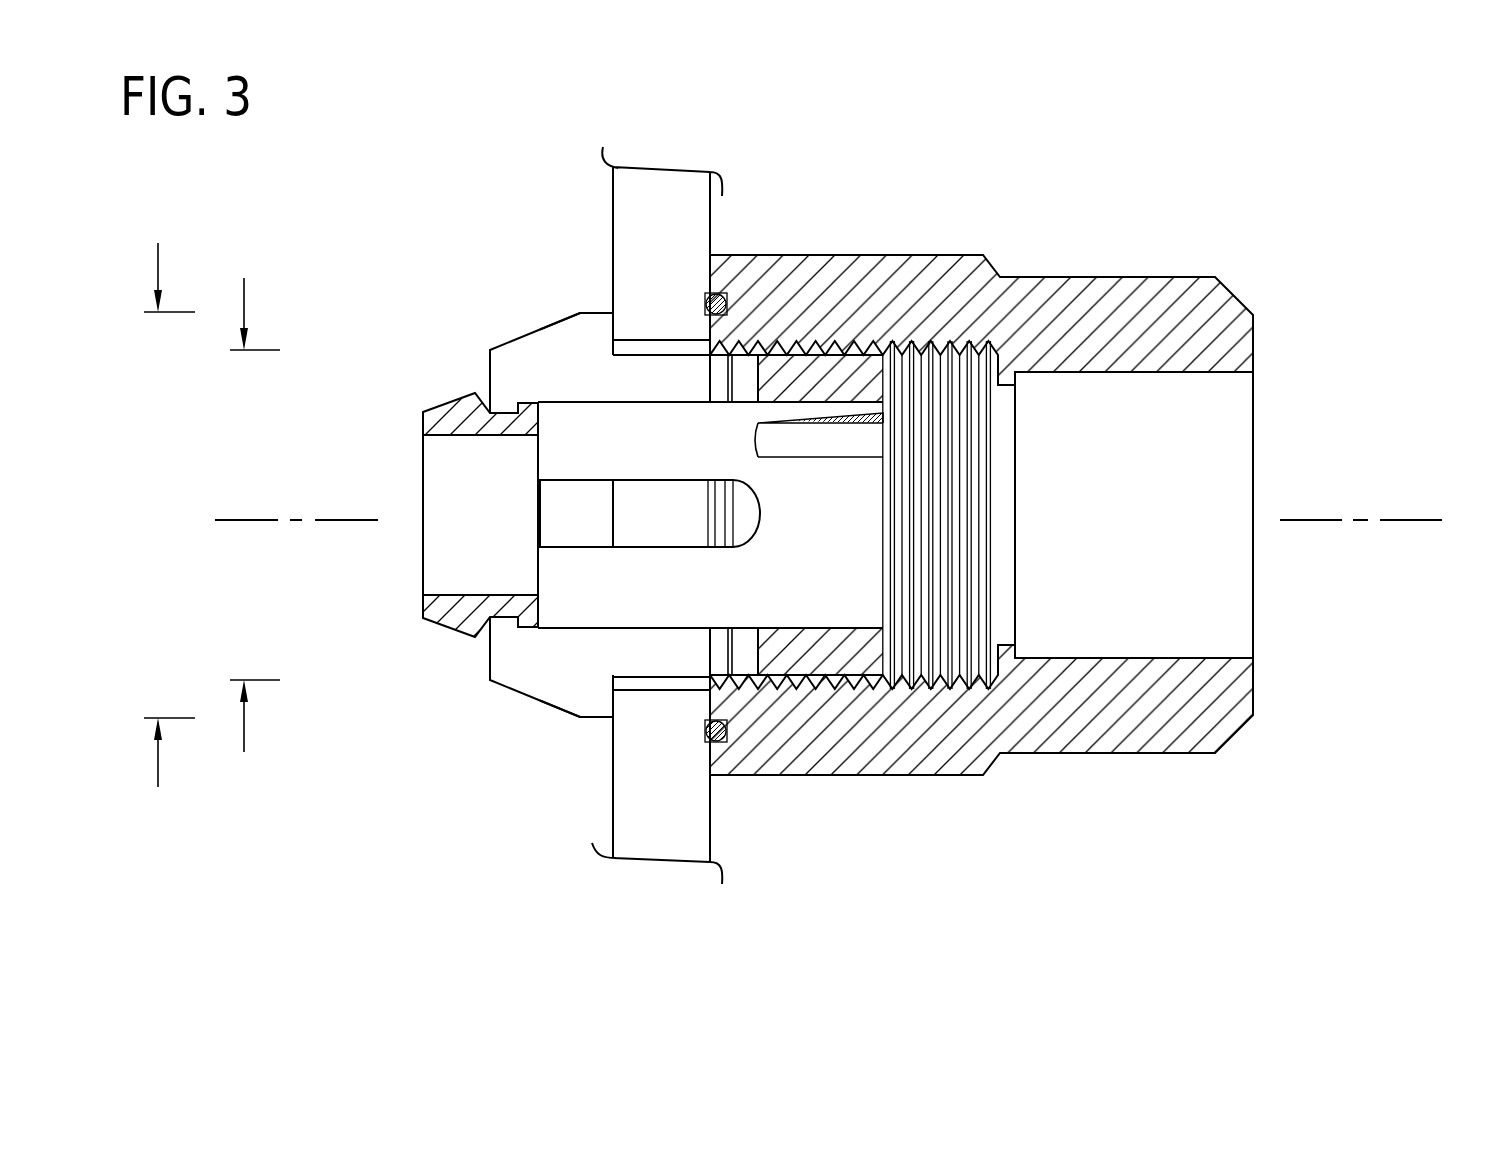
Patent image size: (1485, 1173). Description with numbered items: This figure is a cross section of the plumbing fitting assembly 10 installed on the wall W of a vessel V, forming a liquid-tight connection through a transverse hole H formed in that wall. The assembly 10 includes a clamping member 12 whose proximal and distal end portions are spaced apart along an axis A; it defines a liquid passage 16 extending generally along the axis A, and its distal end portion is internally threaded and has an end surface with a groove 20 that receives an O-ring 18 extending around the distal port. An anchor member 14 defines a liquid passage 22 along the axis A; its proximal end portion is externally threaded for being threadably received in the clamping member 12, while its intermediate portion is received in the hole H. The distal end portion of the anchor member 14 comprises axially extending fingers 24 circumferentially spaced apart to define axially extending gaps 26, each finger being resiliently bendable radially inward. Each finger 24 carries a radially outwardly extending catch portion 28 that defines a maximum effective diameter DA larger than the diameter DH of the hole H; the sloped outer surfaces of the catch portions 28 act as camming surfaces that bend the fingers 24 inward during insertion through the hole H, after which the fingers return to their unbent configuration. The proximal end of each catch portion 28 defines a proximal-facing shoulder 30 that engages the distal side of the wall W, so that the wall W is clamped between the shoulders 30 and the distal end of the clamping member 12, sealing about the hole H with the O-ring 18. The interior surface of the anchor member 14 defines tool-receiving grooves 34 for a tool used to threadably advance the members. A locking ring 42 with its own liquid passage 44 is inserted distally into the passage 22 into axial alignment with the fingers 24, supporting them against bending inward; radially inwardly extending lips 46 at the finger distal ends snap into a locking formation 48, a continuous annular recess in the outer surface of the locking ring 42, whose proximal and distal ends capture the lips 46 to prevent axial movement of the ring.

The plumbing fitting assembly 10 is at (322, 877).
The clamping member 12 is at (957, 793).
The anchor member 14 is at (572, 302).
The liquid passage 16 is at (1050, 507).
The O-ring 18 is at (705, 742).
The groove 20 is at (706, 305).
The liquid passage 22 is at (840, 600).
The fingers 24 is at (657, 353).
The gaps 26 is at (720, 390).
The catch portion 28 is at (585, 321).
The shoulder 30 is at (628, 332).
The tool-receiving groove 34 is at (823, 440).
The locking ring 42 is at (440, 642).
The liquid passage 44 is at (480, 571).
The lips 46 is at (497, 406).
The locking formation 48 is at (522, 432).
The axis A is at (1428, 521).
The hole H is at (630, 692).
The wall W is at (708, 831).
The vessel V is at (597, 891).
The maximum effective diameter DA is at (167, 517).
The diameter of the hole DH is at (251, 517).